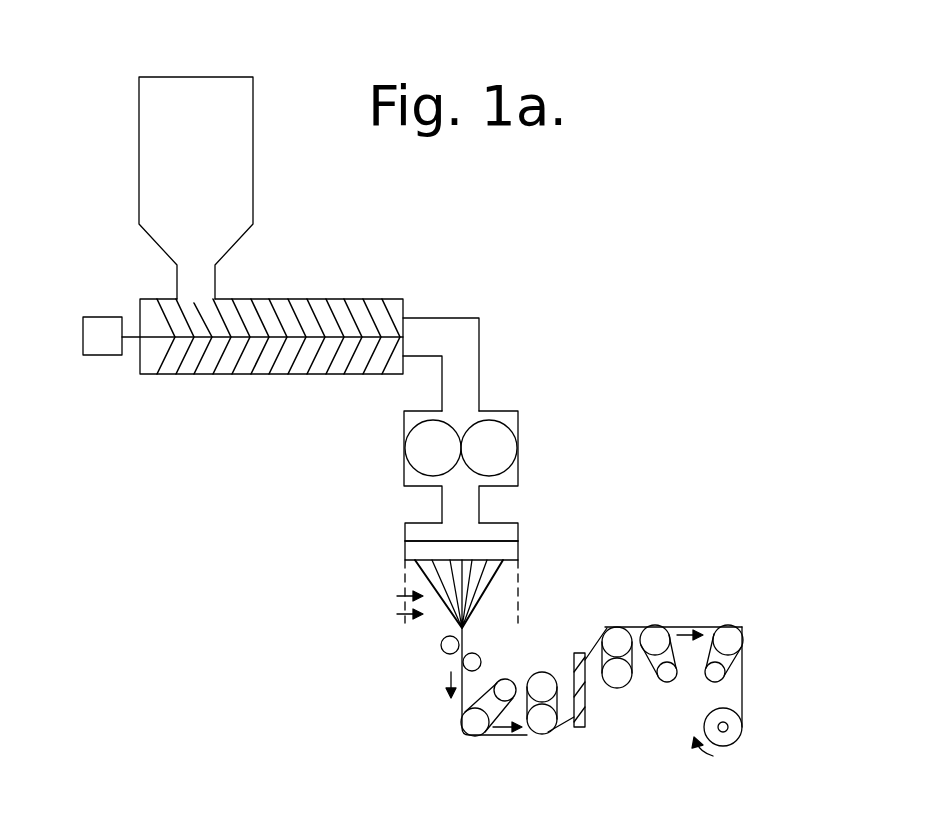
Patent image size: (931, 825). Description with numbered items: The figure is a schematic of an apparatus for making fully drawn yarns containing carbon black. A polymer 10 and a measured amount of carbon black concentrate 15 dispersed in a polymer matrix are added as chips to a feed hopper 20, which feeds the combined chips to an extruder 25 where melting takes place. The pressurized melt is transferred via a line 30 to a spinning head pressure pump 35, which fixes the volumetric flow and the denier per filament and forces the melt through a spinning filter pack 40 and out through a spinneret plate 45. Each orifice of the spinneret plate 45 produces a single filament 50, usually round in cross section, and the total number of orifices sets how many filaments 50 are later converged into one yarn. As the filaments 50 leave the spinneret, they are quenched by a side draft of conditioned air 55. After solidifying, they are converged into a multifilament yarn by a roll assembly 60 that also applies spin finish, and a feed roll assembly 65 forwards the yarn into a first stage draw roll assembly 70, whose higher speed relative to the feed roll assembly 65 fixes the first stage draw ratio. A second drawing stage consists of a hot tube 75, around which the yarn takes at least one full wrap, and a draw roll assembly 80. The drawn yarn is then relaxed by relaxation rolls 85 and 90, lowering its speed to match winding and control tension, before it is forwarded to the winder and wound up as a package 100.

The polymer 10 is at (157, 97).
The carbon black concentrate 15 is at (236, 97).
The feed hopper 20 is at (153, 173).
The extruder 25 is at (283, 301).
The line 30 is at (460, 378).
The spinning head pressure pump 35 is at (502, 448).
The spinning filter pack 40 is at (415, 533).
The spinneret plate 45 is at (508, 549).
The filament 50 is at (482, 607).
The conditioned air 55 is at (397, 606).
The roll assembly 60 is at (442, 645).
The feed roll assembly 65 is at (460, 728).
The first stage draw roll assembly 70 is at (542, 728).
The hot tube 75 is at (580, 720).
The draw roll assembly 80 is at (617, 640).
The relaxation roll 85 is at (657, 640).
The relaxation roll 90 is at (728, 638).
The package 100 is at (728, 733).